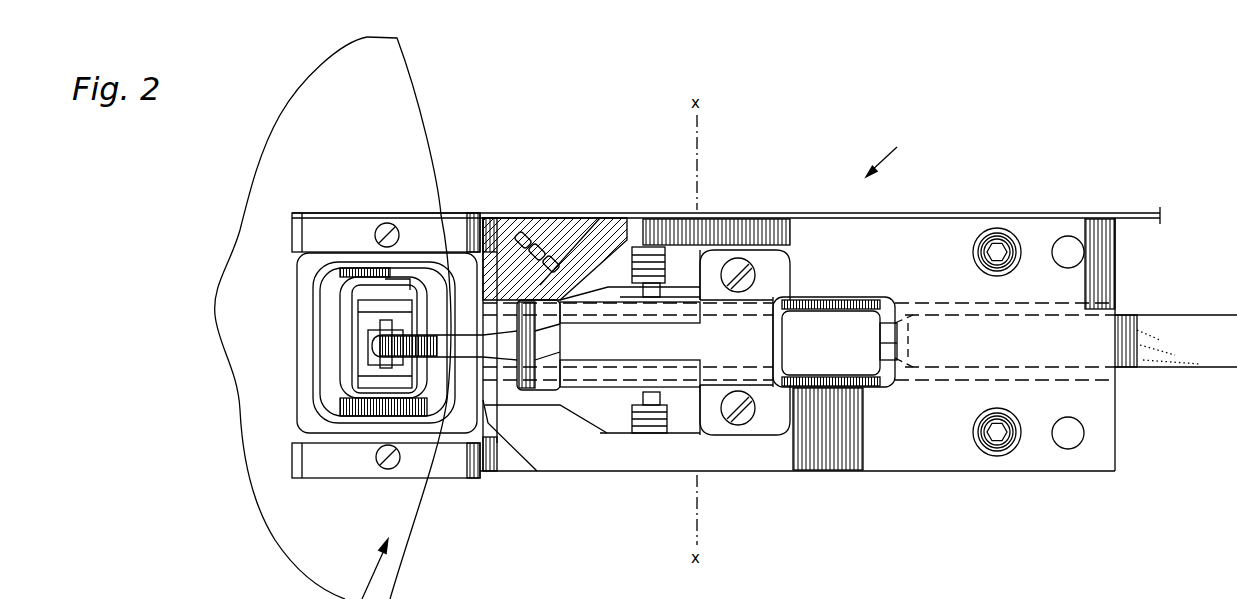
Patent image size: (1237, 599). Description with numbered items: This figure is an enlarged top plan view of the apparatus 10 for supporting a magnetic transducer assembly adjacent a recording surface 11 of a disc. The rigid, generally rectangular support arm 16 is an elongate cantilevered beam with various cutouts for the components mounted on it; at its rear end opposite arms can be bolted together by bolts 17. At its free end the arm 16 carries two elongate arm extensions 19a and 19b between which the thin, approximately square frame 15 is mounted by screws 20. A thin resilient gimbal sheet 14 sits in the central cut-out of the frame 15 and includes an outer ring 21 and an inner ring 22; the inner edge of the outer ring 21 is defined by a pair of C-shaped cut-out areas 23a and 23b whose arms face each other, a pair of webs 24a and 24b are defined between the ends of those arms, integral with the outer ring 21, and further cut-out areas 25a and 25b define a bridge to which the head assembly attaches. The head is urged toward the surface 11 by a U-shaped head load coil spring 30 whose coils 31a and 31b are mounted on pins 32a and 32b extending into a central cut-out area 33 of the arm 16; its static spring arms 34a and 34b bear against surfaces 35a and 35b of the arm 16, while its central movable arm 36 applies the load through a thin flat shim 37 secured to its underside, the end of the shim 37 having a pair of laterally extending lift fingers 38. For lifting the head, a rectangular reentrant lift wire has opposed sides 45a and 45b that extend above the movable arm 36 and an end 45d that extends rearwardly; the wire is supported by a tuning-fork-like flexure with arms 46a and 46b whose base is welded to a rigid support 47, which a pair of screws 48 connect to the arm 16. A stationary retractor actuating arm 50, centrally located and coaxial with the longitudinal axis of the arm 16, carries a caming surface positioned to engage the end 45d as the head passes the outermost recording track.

The apparatus 10 is at (896, 153).
The recording surface 11 is at (393, 90).
The gimbal sheet 14 is at (318, 343).
The frame 15 is at (313, 266).
The support arm 16 is at (923, 230).
The bolts 17 is at (1005, 247).
The arm extension 19a is at (292, 227).
The arm extension 19b is at (297, 458).
The screws 20 is at (392, 468).
The outer ring 21 is at (350, 390).
The inner ring 22 is at (363, 402).
The C-shaped cut-out area 23a is at (360, 282).
The C-shaped cut-out area 23b is at (483, 218).
The web 24a is at (398, 287).
The web 24b is at (398, 397).
The cut-out area 25a is at (403, 287).
The cut-out area 25b is at (407, 393).
The head load coil spring 30 is at (630, 403).
The coil 31a is at (648, 245).
The coil 31b is at (648, 433).
The pin 32a is at (680, 290).
The pin 32b is at (628, 405).
The central cut-out area 33 is at (620, 262).
The static spring arm 34a is at (675, 232).
The static spring arm 34b is at (687, 432).
The surface 35a is at (688, 220).
The surface 35b is at (693, 420).
The movable arm 36 is at (548, 352).
The shim 37 is at (500, 363).
The lift fingers 38 is at (390, 322).
The side of lift wire 45a is at (837, 307).
The side of lift wire 45b is at (873, 378).
The end of lift wire 45d is at (878, 345).
The flexure arm 46a is at (628, 320).
The flexure arm 46b is at (693, 347).
The rigid support 47 is at (778, 290).
The screws 48 is at (755, 283).
The retractor actuating arm 50 is at (1207, 313).